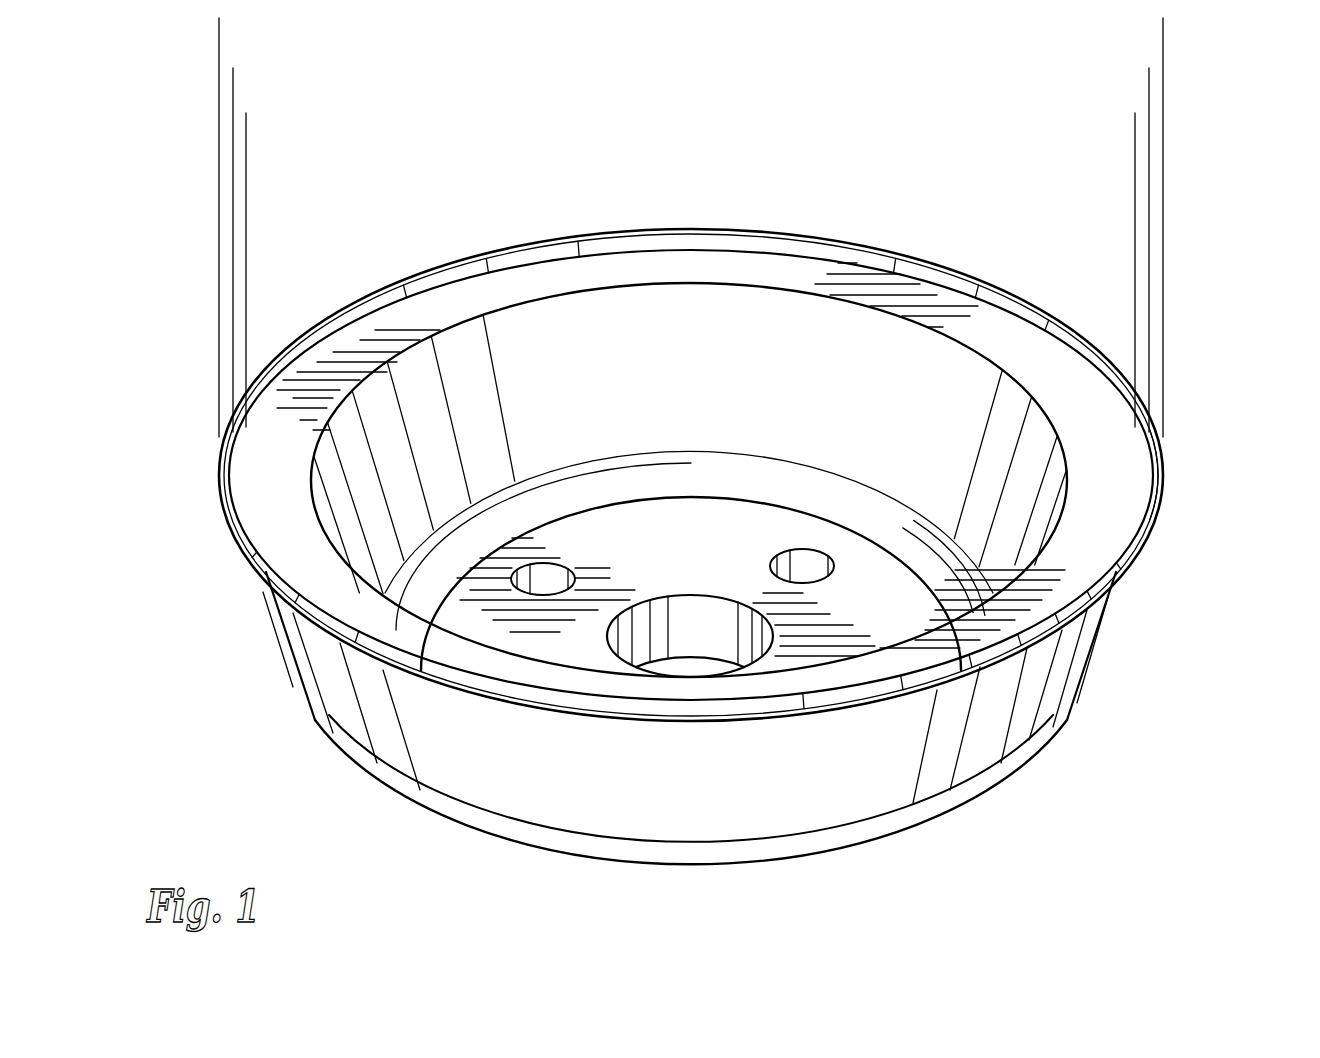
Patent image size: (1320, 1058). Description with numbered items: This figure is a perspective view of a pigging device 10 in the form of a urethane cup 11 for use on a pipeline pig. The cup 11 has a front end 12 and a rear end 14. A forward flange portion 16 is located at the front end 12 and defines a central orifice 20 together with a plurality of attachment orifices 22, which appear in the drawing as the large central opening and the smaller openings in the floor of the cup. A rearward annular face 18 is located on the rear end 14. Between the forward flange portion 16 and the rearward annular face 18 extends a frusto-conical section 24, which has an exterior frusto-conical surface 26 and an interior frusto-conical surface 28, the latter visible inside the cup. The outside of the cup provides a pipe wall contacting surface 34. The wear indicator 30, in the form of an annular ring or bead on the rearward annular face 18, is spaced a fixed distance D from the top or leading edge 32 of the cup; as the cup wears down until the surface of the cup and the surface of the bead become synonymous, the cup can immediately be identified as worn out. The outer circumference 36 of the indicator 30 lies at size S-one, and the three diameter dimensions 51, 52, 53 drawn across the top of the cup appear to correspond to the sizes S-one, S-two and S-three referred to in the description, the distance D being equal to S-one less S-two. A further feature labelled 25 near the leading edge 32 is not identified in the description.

The pigging device 10 is at (857, 230).
The cup 11 is at (1040, 318).
The front end 12 is at (823, 850).
The rear end 14 is at (428, 274).
The forward flange portion 16 is at (437, 793).
The rearward annular face 18 is at (998, 332).
The central orifice 20 is at (663, 613).
The attachment orifice 22 is at (675, 520).
The frusto-conical section 24 is at (365, 693).
The rim lip 25 is at (1152, 500).
The exterior frusto-conical surface 26 is at (972, 740).
The interior frusto-conical surface 28 is at (417, 403).
The wear indicator 30 is at (1067, 325).
The top or leading edge 32 is at (1162, 443).
The pipe wall contacting surface 34 is at (625, 735).
The outer circumference 36 is at (283, 399).
The outer diameter 51 is at (1163, 46).
The intermediate diameter 52 is at (1149, 88).
The inner diameter 53 is at (1135, 132).